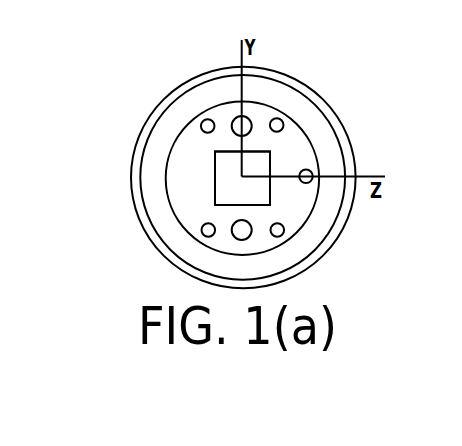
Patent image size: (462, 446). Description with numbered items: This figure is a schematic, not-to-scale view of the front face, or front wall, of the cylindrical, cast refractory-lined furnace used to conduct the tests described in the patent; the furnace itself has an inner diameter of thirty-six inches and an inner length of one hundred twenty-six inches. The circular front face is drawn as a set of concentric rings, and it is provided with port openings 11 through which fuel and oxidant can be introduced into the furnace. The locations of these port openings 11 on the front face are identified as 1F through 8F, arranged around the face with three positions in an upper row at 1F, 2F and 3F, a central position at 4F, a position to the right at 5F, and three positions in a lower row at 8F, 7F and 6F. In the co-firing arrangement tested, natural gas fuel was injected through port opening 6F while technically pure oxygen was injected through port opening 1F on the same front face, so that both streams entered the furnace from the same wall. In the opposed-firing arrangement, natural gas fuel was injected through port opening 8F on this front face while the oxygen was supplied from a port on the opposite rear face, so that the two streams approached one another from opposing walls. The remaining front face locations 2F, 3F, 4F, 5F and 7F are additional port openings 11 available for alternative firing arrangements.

The port openings 11 is at (281, 118).
The front face port opening location 1F is at (201, 137).
The front face port opening location 2F is at (250, 134).
The front face port opening location 3F is at (285, 136).
The front face port opening location 4F is at (242, 179).
The front face port opening location 5F is at (302, 188).
The front face port opening location 6F is at (286, 220).
The front face port opening location 7F is at (251, 221).
The front face port opening location 8F is at (200, 220).